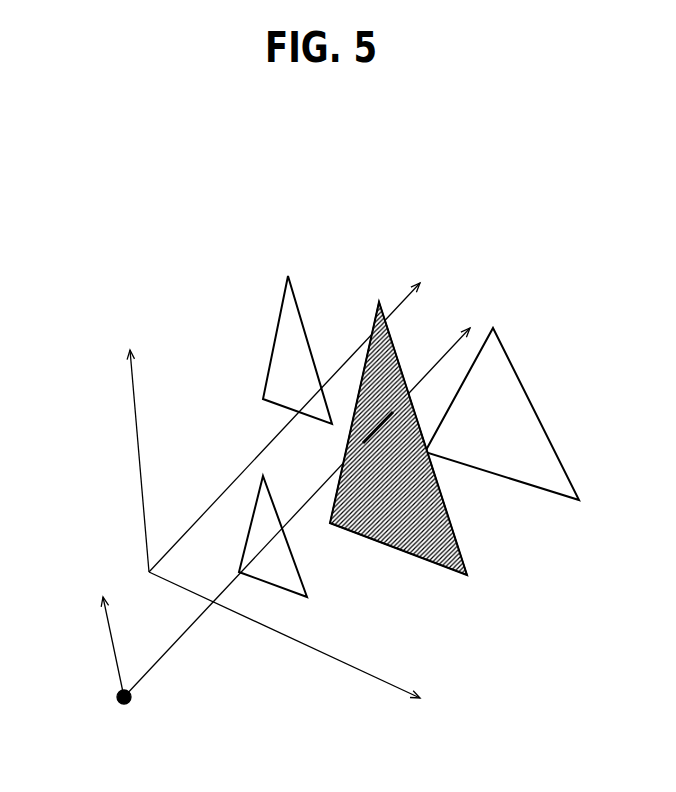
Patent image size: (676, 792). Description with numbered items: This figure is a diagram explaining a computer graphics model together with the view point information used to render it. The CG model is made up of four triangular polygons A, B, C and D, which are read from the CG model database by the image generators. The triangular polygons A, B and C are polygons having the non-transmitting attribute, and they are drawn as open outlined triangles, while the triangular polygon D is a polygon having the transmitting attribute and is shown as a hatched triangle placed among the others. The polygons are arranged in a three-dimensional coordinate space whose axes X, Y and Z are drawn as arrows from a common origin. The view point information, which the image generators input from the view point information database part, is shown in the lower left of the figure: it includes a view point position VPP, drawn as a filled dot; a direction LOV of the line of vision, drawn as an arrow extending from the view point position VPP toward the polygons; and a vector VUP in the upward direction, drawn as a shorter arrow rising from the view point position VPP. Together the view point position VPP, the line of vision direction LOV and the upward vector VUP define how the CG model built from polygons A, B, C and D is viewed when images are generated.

The triangular polygon A is at (269, 536).
The triangular polygon B is at (283, 350).
The triangular polygon C is at (502, 414).
The triangular polygon D is at (400, 439).
The X axis X is at (299, 641).
The Y axis Y is at (124, 455).
The Z axis Z is at (292, 420).
The vector in the upward direction VUP is at (83, 647).
The direction of the line of vision LOV is at (297, 512).
The view point position VPP is at (124, 716).